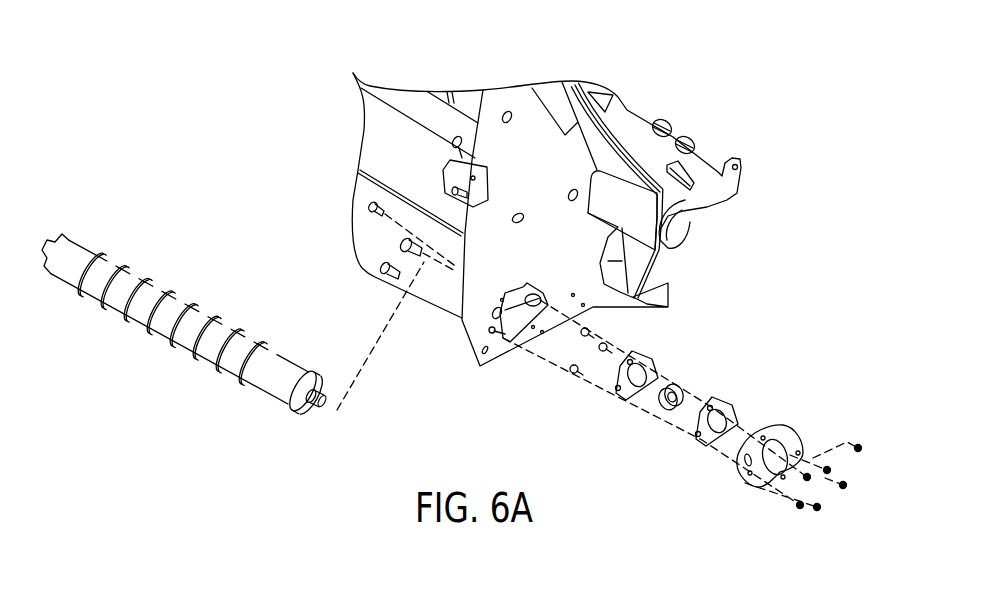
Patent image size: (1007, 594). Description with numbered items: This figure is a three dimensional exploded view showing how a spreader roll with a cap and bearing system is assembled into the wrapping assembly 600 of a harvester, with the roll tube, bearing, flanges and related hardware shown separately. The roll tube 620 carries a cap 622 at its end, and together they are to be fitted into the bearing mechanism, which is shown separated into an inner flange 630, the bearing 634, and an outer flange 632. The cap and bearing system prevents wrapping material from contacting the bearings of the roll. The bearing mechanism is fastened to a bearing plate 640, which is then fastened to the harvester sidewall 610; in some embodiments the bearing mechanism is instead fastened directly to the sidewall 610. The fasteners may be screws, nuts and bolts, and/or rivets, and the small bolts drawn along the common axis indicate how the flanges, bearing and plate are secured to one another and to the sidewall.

The wrapping assembly 600 is at (385, 113).
The harvester sidewall 610 is at (526, 142).
The roll tube 620 is at (267, 363).
The cap 622 is at (308, 380).
The inner flange 630 is at (652, 362).
The outer flange 632 is at (731, 412).
The bearing 634 is at (681, 392).
The bearing plate 640 is at (800, 430).